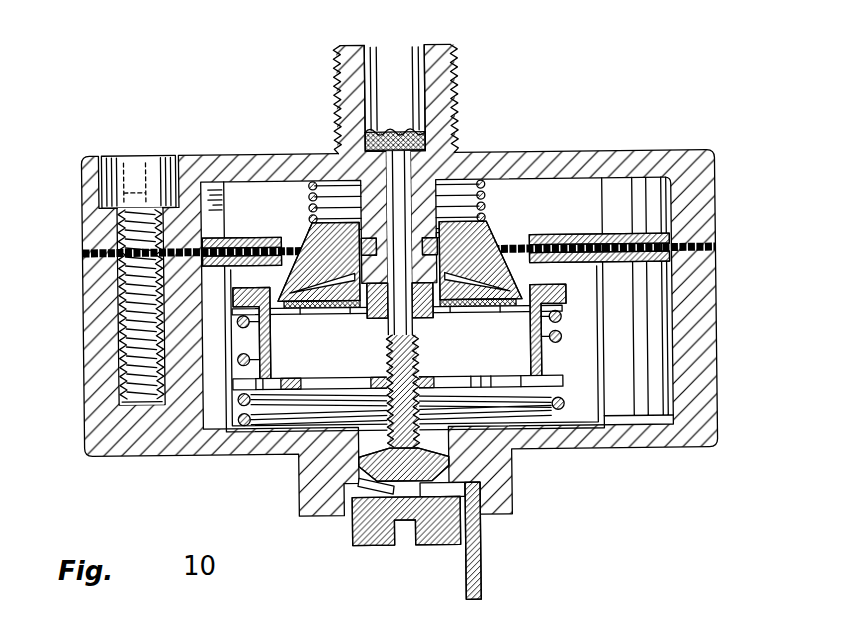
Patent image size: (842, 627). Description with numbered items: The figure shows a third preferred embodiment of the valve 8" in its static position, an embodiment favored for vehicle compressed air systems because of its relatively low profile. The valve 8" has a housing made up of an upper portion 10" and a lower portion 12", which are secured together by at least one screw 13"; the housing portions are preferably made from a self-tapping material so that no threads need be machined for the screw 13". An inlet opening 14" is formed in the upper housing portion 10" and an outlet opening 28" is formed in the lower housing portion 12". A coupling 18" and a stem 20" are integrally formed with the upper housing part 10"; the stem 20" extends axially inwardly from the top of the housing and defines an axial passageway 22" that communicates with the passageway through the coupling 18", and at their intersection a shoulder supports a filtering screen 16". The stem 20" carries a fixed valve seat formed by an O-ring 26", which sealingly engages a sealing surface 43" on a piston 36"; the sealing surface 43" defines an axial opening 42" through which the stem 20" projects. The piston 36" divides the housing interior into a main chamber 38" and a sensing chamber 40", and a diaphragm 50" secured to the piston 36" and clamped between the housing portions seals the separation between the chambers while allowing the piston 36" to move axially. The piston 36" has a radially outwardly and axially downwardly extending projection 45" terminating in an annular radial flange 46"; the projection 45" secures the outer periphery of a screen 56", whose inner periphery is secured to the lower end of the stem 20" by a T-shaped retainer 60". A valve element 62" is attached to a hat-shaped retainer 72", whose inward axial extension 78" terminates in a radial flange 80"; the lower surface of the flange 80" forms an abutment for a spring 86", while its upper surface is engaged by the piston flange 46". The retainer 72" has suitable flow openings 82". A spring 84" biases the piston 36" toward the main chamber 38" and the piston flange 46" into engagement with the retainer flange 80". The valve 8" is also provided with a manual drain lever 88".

The valve 8 is at (153, 97).
The upper housing portion 10 is at (88, 155).
The lower housing portion 12 is at (90, 294).
The screw 13 is at (172, 156).
The inlet opening 14 is at (410, 73).
The filtering screen 16 is at (397, 133).
The coupling 18 is at (441, 90).
The stem 20 is at (447, 205).
The axial passageway 22 is at (397, 215).
The O-ring 26 is at (485, 224).
The outlet opening 28 is at (510, 465).
The piston 36 is at (303, 224).
The main chamber 38 is at (563, 405).
The sensing chamber 40 is at (600, 224).
The axial opening 42 is at (363, 252).
The sealing surface 43 is at (413, 328).
The projection 45 is at (528, 273).
The annular radial flange 46 is at (162, 333).
The diaphragm 50 is at (650, 238).
The screen 56 is at (225, 410).
The T-shaped retainer 60 is at (428, 317).
The valve element 62 is at (344, 520).
The hat-shaped retainer 72 is at (418, 405).
The inward axial extension 78 is at (562, 354).
The radial flange 80 is at (563, 302).
The flow openings 82 is at (313, 386).
The spring 84 is at (484, 190).
The spring 86 is at (255, 405).
The manual drain lever 88 is at (486, 536).